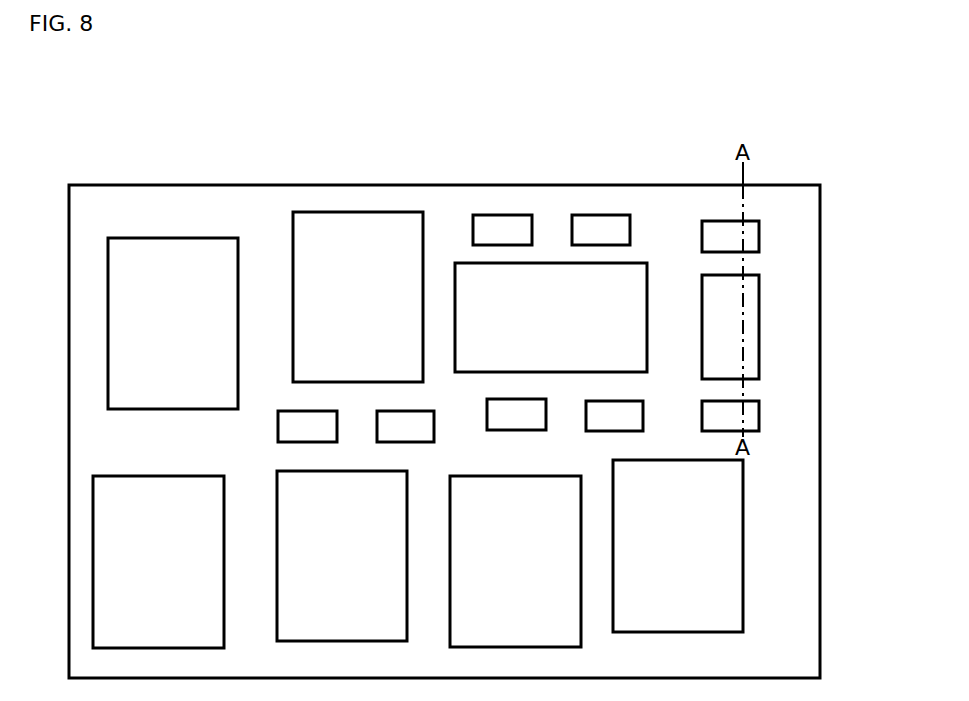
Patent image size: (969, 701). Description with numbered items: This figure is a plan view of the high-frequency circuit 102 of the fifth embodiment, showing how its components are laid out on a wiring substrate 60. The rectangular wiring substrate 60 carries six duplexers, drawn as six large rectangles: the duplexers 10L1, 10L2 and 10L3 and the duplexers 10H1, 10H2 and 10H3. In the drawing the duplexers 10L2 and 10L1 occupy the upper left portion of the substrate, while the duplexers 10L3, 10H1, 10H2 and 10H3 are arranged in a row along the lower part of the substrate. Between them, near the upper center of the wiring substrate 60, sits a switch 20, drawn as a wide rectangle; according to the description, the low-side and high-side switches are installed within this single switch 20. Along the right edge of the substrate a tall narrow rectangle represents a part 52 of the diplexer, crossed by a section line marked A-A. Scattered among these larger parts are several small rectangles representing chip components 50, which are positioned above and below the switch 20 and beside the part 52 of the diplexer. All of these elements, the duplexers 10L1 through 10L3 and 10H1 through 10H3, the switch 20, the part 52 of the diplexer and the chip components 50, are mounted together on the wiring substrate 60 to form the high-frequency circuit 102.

The duplexer 10L1 is at (293, 240).
The duplexer 10L2 is at (160, 238).
The duplexer 10L3 is at (201, 476).
The duplexer 10H1 is at (407, 612).
The duplexer 10H2 is at (581, 612).
The duplexer 10H3 is at (743, 600).
The switch 20 is at (647, 263).
The chip components 50 is at (473, 215).
The part of the diplexer 52 is at (759, 303).
The wiring substrate 60 is at (820, 215).
The high-frequency circuit 102 is at (775, 135).